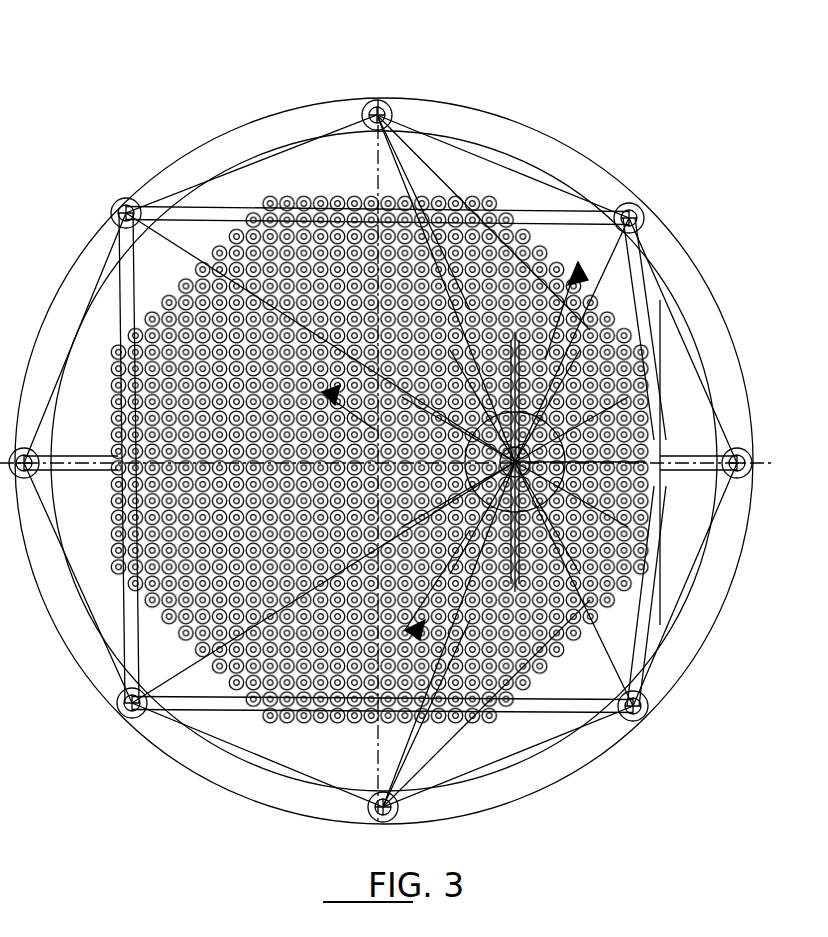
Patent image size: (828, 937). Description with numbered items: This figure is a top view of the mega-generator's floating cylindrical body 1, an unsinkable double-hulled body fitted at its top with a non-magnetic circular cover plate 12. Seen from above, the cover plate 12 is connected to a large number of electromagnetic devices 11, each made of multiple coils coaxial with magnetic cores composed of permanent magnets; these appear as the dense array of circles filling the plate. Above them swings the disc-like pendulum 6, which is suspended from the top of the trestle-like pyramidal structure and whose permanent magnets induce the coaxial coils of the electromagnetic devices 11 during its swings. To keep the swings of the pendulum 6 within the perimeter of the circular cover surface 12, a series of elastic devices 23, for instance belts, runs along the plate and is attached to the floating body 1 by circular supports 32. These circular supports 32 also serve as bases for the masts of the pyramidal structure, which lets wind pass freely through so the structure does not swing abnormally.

The floating cylindrical body 1 is at (193, 130).
The disc-like pendulum 6 is at (628, 420).
The electromagnetic devices 11 is at (490, 648).
The non-magnetic circular cover plate 12 is at (515, 190).
The elastic devices 23 is at (328, 155).
The circular supports 32 is at (378, 97).